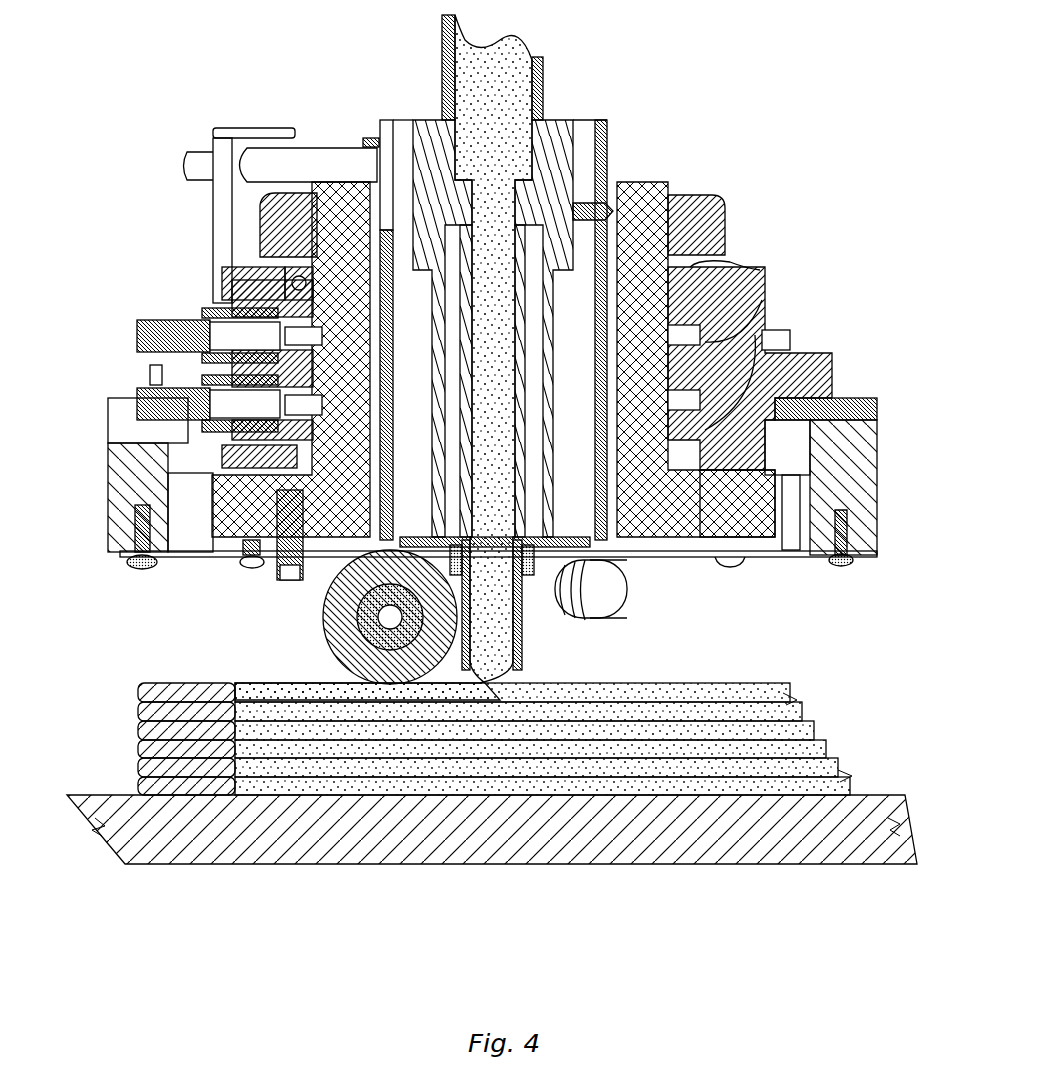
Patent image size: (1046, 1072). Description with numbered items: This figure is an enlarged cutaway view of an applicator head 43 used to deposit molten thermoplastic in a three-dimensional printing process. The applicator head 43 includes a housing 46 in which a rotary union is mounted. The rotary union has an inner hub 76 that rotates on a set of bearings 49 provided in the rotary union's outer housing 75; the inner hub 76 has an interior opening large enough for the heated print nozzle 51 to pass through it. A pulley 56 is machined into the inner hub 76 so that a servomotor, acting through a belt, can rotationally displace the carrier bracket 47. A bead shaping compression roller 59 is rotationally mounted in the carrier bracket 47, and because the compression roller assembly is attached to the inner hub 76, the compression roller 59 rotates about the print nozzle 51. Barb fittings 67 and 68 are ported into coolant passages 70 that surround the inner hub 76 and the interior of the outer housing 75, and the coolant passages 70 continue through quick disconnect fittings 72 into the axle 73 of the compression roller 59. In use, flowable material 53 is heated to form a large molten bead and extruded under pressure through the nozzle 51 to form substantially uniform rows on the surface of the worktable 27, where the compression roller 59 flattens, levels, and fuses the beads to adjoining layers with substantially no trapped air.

The worktable 27 is at (630, 867).
The applicator head 43 is at (812, 213).
The housing 46 is at (880, 472).
The carrier bracket 47 is at (265, 565).
The bearings 49 is at (760, 470).
The nozzle 51 is at (435, 118).
The flowable material 53 is at (520, 40).
The pulley 56 is at (780, 510).
The compression roller 59 is at (323, 625).
The barb fitting 67 is at (137, 403).
The barb fitting 68 is at (137, 343).
The coolant passages 70 is at (758, 294).
The quick disconnect fittings 72 is at (610, 615).
The axle 73 is at (325, 605).
The outer housing 75 is at (255, 268).
The inner hub 76 is at (637, 182).